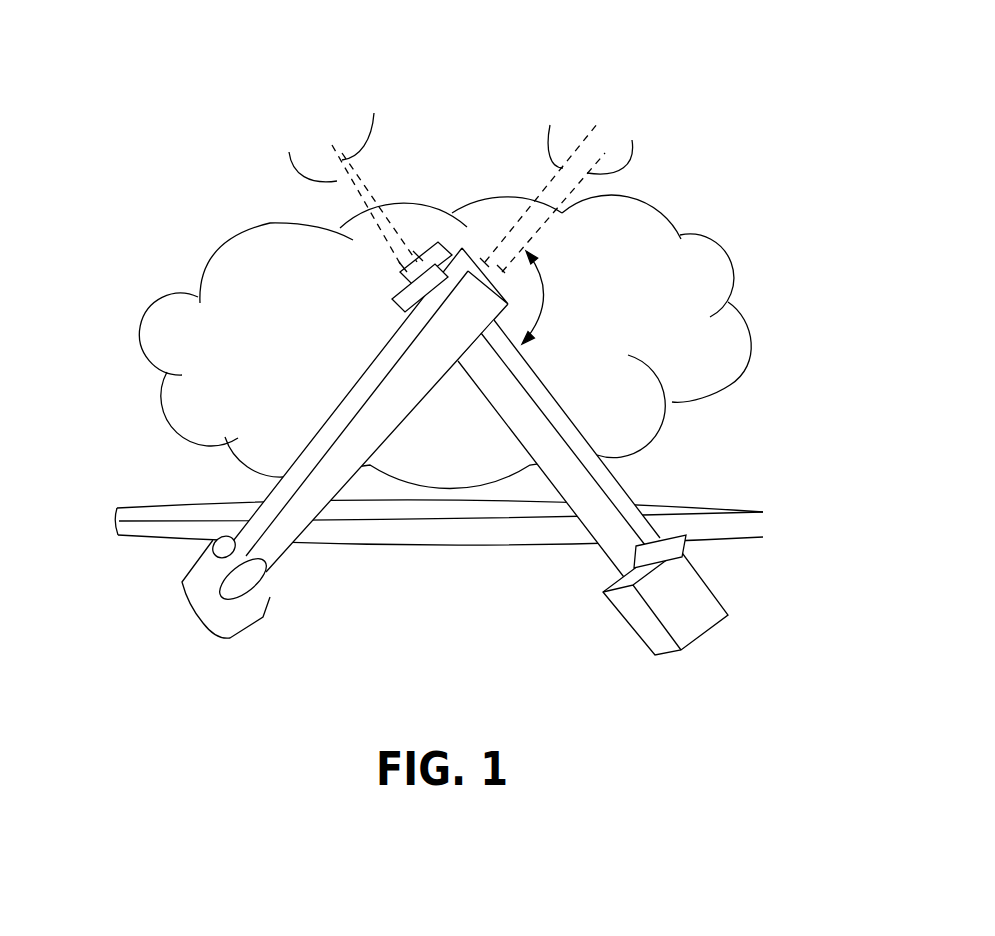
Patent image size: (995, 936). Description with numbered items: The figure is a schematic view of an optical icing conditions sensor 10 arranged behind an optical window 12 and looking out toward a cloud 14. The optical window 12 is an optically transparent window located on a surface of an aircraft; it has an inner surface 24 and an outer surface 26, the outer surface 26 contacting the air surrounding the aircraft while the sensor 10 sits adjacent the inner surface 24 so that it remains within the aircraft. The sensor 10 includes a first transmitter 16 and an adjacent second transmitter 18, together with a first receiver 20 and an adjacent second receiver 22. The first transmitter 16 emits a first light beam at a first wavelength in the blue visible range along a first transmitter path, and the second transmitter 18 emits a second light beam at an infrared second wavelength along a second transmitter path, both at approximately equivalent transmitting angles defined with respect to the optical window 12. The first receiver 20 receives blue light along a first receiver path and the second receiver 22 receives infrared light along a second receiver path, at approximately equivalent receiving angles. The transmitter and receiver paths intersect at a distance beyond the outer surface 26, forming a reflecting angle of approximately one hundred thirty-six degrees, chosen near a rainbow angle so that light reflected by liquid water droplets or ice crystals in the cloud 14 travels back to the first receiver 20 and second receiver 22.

The optical icing conditions sensor 10 is at (451, 358).
The optical window 12 is at (409, 518).
The cloud 14 is at (703, 354).
The first transmitter 16 is at (250, 621).
The second transmitter 18 is at (188, 587).
The first receiver 20 is at (637, 638).
The second receiver 22 is at (723, 582).
The inner surface 24 is at (140, 540).
The outer surface 26 is at (187, 512).